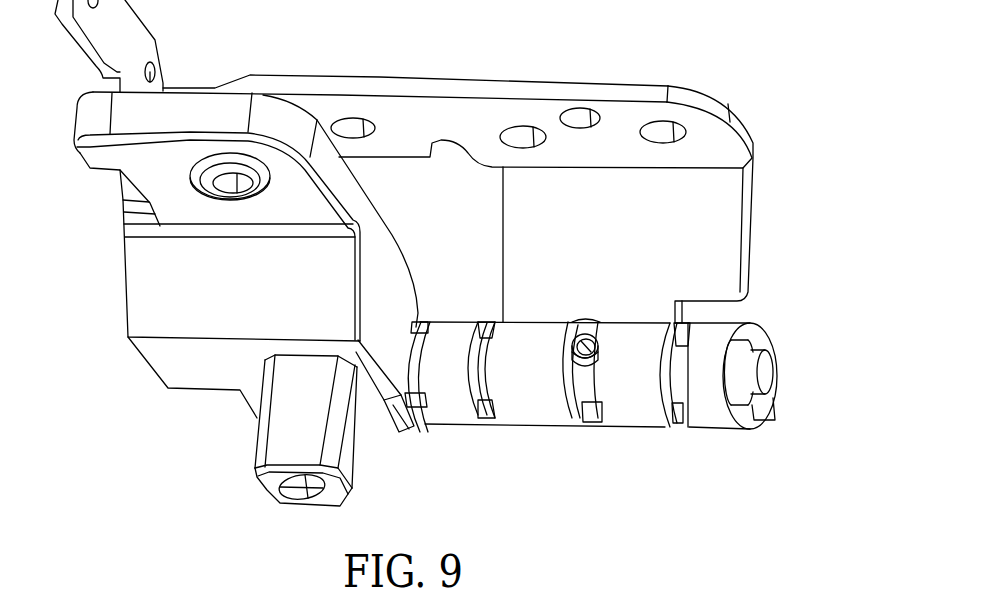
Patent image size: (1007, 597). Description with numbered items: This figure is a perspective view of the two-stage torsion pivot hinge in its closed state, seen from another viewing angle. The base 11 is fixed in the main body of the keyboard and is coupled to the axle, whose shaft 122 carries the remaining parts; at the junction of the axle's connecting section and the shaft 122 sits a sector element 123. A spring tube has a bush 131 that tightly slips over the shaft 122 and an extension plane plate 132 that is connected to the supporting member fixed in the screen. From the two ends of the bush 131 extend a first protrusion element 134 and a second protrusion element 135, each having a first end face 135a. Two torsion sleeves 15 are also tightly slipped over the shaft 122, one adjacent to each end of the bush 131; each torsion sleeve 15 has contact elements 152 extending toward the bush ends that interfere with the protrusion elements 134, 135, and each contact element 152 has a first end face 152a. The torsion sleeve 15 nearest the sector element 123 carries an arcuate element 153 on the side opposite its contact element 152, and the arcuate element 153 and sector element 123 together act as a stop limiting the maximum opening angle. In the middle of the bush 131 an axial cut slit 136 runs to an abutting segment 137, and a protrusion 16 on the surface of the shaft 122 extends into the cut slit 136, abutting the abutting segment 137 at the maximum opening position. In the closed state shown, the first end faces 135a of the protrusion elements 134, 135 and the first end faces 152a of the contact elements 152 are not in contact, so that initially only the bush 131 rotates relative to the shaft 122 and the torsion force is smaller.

The base 11 is at (160, 308).
The torsion sleeve 15 is at (440, 420).
The protrusion 16 is at (586, 338).
The shaft 122 is at (766, 375).
The sector element 123 is at (425, 320).
The bush 131 is at (550, 421).
The extension plane plate 132 is at (733, 246).
The first protrusion element 134 is at (488, 420).
The second protrusion element 135 is at (678, 420).
The first end face 135a is at (672, 420).
The cut slit 136 is at (573, 380).
The abutting segment 137 is at (593, 420).
The contact element 152 is at (488, 332).
The first end face 152a is at (672, 330).
The arcuate element 153 is at (397, 430).